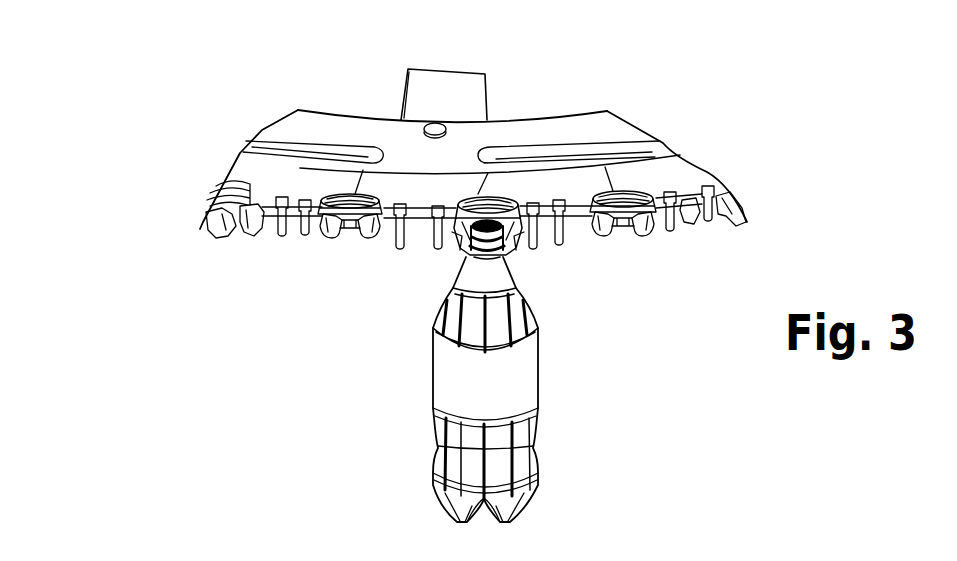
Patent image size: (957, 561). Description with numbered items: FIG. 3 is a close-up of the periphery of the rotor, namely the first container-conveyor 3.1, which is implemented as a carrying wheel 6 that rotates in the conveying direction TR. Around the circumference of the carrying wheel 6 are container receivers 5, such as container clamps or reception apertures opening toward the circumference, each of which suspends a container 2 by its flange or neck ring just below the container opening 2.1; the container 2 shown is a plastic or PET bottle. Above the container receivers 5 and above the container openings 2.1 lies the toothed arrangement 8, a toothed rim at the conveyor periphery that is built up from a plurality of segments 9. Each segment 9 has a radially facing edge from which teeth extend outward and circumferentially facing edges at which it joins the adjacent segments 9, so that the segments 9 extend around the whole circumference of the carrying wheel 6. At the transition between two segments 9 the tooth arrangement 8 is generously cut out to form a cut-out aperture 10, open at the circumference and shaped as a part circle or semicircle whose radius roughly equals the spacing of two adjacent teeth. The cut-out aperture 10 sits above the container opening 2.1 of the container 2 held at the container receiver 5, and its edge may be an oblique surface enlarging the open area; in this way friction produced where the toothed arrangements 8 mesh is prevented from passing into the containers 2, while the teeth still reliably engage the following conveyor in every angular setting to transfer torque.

The container 2 is at (518, 372).
The container opening 2.1 is at (490, 225).
The first container-conveyor 3.1 is at (217, 270).
The container receiver 5 is at (373, 247).
The carrying wheel 6 is at (313, 113).
The toothed arrangement 8 is at (687, 227).
The segment 9 is at (257, 173).
The cut-out aperture 10 is at (507, 200).
The conveying direction TR is at (797, 124).